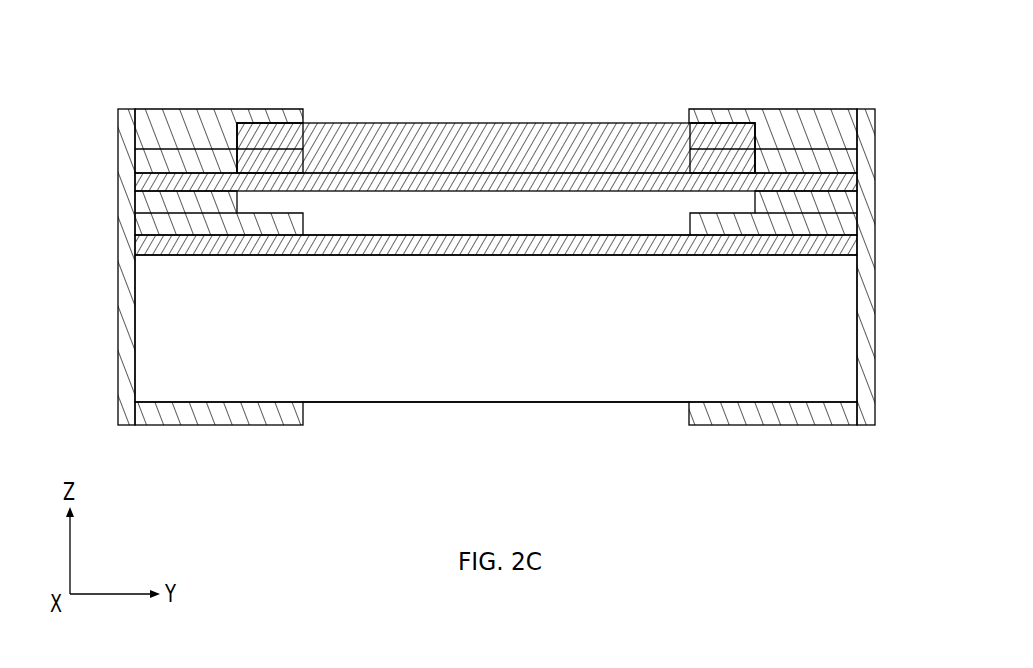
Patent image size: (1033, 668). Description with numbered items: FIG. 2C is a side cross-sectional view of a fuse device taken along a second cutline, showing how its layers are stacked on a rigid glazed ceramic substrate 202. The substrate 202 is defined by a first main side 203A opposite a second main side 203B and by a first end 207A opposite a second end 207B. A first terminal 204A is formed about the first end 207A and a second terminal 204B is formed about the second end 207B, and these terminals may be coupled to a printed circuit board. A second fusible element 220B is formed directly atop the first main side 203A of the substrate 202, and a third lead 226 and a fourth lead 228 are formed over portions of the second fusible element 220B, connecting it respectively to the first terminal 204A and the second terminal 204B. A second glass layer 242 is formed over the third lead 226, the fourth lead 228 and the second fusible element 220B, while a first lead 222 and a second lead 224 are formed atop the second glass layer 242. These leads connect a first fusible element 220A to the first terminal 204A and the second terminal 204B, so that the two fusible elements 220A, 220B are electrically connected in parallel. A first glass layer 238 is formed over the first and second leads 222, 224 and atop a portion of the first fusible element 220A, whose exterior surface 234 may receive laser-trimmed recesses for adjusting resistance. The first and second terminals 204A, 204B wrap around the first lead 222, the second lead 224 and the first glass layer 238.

The substrate 202 is at (401, 381).
The first main side 203A is at (850, 247).
The second main side 203B is at (627, 403).
The first terminal 204A is at (112, 128).
The second terminal 204B is at (880, 132).
The first end 207A is at (100, 362).
The second end 207B is at (891, 375).
The first fusible element 220A is at (585, 186).
The second fusible element 220B is at (641, 257).
The first lead 222 is at (172, 157).
The second lead 224 is at (790, 150).
The third lead 226 is at (140, 222).
The fourth lead 228 is at (847, 232).
The exterior surface 234 is at (333, 173).
The first glass layer 238 is at (358, 140).
The second glass layer 242 is at (476, 213).